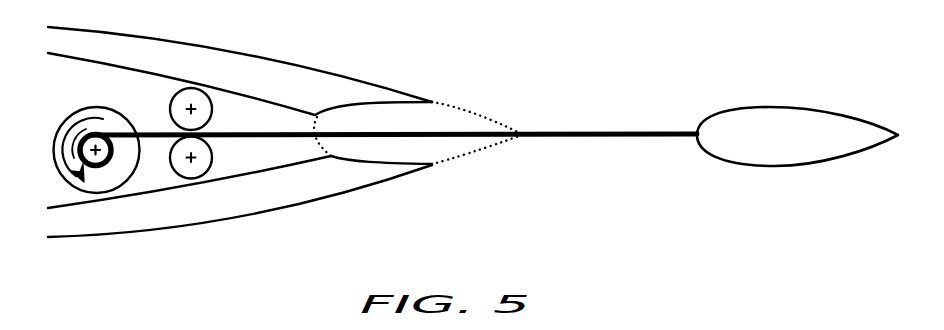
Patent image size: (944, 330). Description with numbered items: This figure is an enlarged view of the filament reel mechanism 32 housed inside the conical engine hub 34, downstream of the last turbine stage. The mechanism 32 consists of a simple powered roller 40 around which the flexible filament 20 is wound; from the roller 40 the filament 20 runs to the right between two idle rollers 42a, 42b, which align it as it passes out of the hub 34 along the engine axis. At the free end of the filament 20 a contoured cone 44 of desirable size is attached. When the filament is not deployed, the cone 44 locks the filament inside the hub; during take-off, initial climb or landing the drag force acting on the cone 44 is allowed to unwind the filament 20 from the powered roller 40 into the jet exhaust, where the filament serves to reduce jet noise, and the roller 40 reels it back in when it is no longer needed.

The filament 20 is at (597, 138).
The reel mechanism 32 is at (157, 170).
The engine hub 34 is at (325, 70).
The powered roller 40 is at (55, 137).
The idle roller 42a is at (219, 105).
The idle roller 42b is at (219, 143).
The contoured cone 44 is at (484, 113).